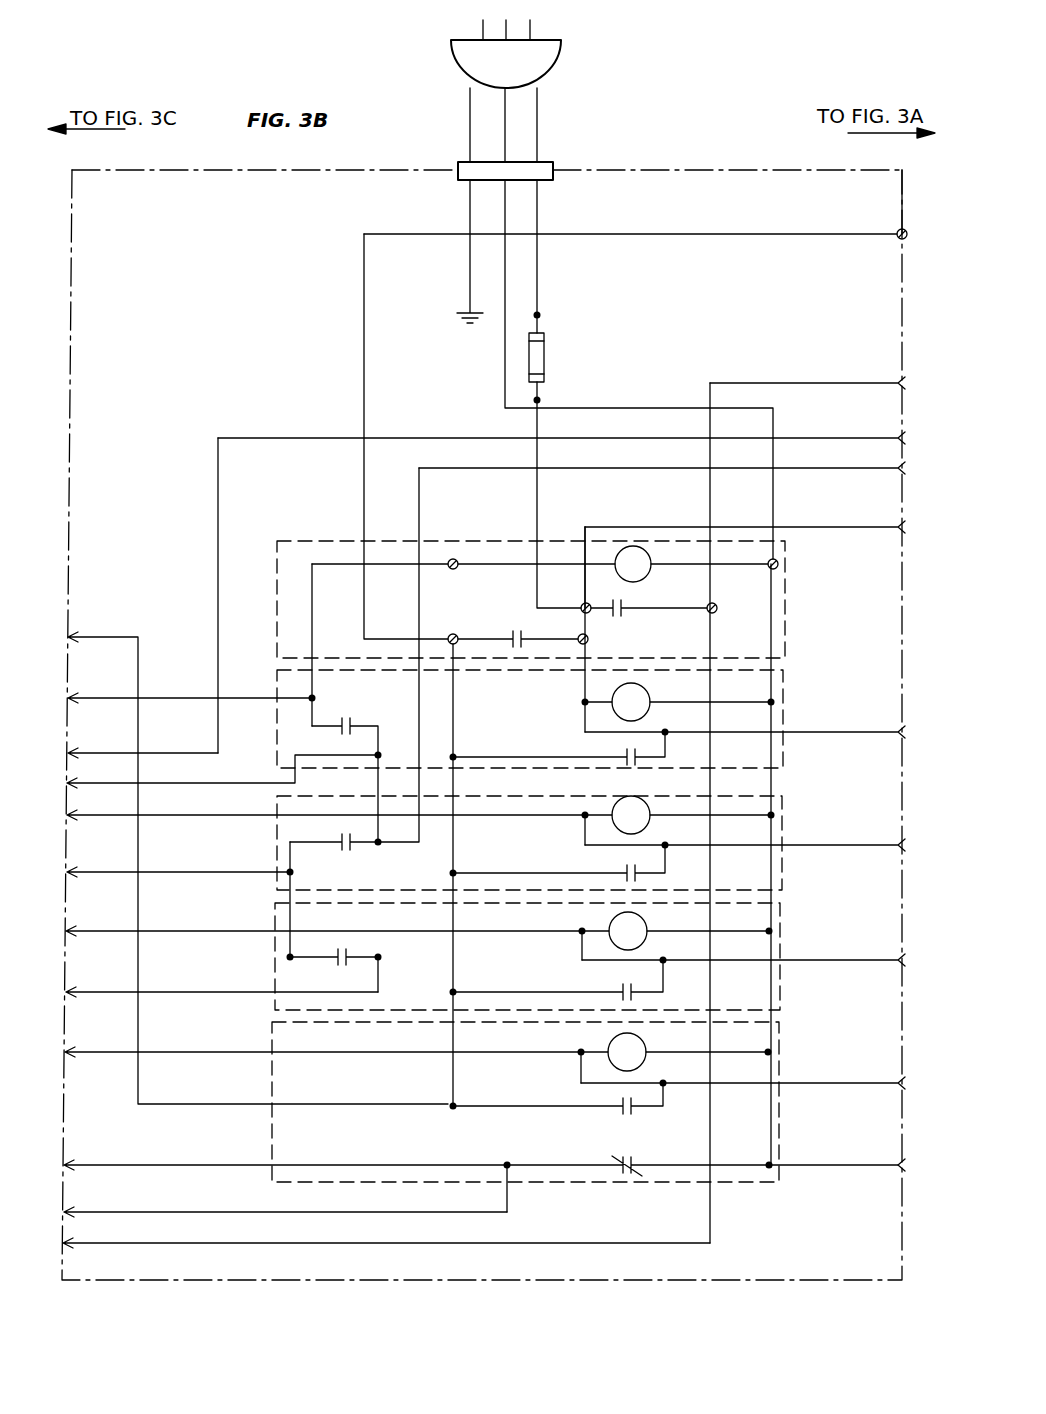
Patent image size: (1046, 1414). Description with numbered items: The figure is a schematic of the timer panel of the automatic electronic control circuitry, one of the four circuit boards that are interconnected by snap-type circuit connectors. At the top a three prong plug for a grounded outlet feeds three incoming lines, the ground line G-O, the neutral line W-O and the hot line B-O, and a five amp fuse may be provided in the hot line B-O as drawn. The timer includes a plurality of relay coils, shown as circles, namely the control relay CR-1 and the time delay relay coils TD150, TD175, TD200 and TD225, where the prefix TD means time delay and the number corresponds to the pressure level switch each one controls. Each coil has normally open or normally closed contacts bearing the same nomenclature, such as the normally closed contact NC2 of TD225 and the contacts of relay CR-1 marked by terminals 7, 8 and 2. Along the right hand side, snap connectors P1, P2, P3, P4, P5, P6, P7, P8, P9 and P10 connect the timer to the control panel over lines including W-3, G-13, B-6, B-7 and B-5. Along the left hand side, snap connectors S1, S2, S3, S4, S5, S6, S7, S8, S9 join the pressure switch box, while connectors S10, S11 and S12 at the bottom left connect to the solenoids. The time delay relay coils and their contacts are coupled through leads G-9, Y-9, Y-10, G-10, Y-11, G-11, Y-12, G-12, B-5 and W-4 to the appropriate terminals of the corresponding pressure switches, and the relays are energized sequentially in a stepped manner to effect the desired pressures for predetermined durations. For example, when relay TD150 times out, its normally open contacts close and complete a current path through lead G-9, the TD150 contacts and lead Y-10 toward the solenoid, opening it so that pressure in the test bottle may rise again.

The control relay coil CR-1 is at (531, 816).
The time delay relay coil TD150 is at (606, 758).
The time delay relay coil TD175 is at (606, 876).
The time delay relay coil TD200 is at (605, 956).
The time delay relay coil TD225 is at (603, 1102).
The relay terminal 7 is at (453, 579).
The relay terminal 8 is at (517, 629).
The relay terminal 2 is at (765, 575).
The normally closed contact NC2 is at (505, 1163).
The snap connector P1 is at (916, 1165).
The snap connector P2 is at (758, 1083).
The snap connector P3 is at (758, 960).
The snap connector P4 is at (760, 845).
The snap connector P5 is at (760, 726).
The snap connector P6 is at (716, 609).
The snap connector P7 is at (656, 642).
The snap connector P8 is at (576, 582).
The snap connector P9 is at (822, 799).
The snap connector P10 is at (638, 404).
The snap connector S1 is at (258, 858).
The snap connector S2 is at (190, 688).
The snap connector S3 is at (143, 743).
The snap connector S4 is at (222, 771).
The snap connector S5 is at (465, 818).
The snap connector S6 is at (178, 862).
The snap connector S7 is at (464, 933).
The snap connector S8 is at (222, 982).
The snap connector S9 is at (464, 1055).
The snap connector S10 is at (285, 1176).
The snap connector S11 is at (285, 1202).
The snap connector S12 is at (386, 1233).
The green ground wire G-O is at (465, 251).
The white neutral wire W-O is at (628, 369).
The hot line B-O is at (548, 394).
The lead B-5 is at (388, 436).
The wire B-6 is at (541, 609).
The wire B-7 is at (779, 799).
The lead Y-9 is at (531, 582).
The lead Y-10 is at (618, 642).
The lead Y-11 is at (176, 860).
The lead Y-12 is at (176, 980).
The lead G-9 is at (169, 686).
The lead G-10 is at (507, 818).
The lead G-11 is at (509, 933).
The lead G-12 is at (509, 1055).
The wire G-13 is at (839, 720).
The wire W-3 is at (797, 865).
The lead W-4 is at (179, 1176).